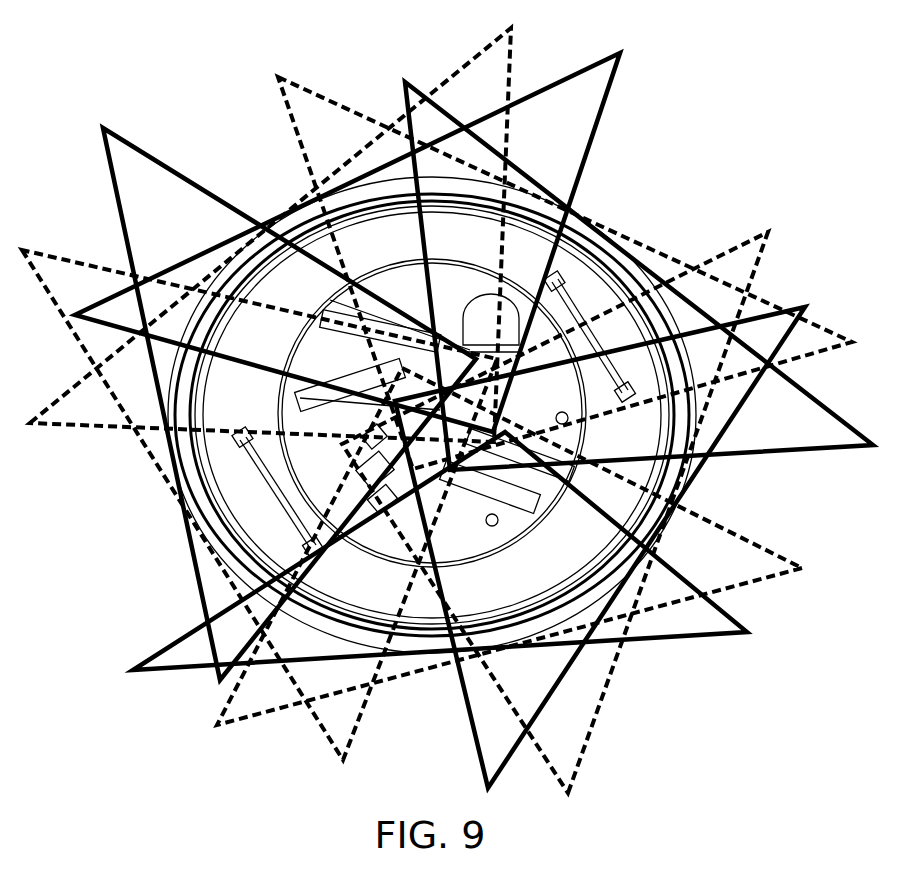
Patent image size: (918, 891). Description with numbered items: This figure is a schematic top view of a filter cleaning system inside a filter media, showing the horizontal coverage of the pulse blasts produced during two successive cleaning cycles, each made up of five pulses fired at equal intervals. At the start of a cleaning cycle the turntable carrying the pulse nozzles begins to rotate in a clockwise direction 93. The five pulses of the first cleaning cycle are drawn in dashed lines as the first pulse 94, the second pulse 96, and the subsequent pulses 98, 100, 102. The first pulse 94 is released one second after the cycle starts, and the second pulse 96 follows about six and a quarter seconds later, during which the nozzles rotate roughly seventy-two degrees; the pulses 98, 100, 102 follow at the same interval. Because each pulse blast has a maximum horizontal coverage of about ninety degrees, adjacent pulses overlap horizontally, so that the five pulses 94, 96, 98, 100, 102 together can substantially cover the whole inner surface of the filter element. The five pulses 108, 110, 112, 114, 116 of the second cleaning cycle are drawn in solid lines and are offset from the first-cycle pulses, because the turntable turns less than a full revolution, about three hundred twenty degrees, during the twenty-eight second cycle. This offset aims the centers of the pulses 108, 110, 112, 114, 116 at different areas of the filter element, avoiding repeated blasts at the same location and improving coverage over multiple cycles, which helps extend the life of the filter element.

The clockwise direction 93 is at (687, 203).
The first pulse 94 is at (308, 98).
The second pulse 96 is at (733, 267).
The third pulse 98 is at (735, 572).
The fourth pulse 100 is at (332, 722).
The fifth pulse 102 is at (82, 412).
The first pulse of second cleaning cycle 108 is at (103, 310).
The second pulse of second cleaning cycle 110 is at (433, 118).
The third pulse of second cleaning cycle 112 is at (767, 332).
The fourth pulse of second cleaning cycle 114 is at (710, 618).
The fifth pulse of second cleaning cycle 116 is at (223, 637).